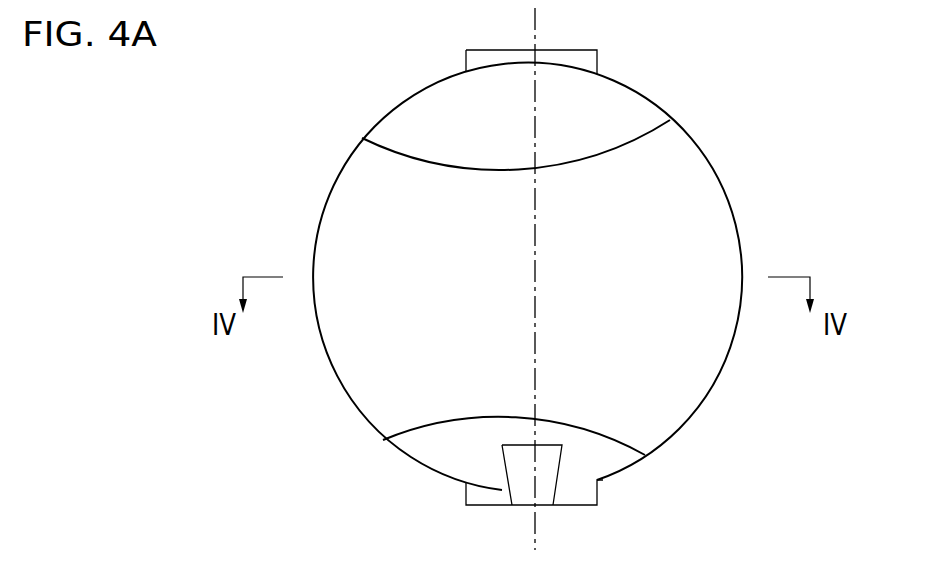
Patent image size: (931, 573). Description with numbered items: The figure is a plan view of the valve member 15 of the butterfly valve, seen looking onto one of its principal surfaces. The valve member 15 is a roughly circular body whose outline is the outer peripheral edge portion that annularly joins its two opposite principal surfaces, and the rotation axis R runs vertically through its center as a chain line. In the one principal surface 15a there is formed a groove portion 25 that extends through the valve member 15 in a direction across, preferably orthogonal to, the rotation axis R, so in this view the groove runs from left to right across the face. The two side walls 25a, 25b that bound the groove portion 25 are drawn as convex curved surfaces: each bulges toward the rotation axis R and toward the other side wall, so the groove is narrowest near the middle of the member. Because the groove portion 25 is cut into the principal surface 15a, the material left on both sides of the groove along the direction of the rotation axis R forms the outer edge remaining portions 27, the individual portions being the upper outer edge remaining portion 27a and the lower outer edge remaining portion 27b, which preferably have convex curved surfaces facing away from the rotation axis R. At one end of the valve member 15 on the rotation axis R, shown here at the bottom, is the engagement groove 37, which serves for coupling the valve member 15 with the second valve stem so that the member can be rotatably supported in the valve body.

The rotation axis R is at (537, 22).
The valve member 15 is at (718, 178).
The principal surface 15a is at (625, 103).
The groove portion 25 is at (670, 402).
The side wall 25a is at (407, 155).
The side wall 25b is at (437, 429).
The outer edge remaining portions 27 is at (238, 360).
The outer edge remaining portion 27a is at (492, 148).
The outer edge remaining portion 27b is at (507, 432).
The engagement groove 37 is at (553, 487).